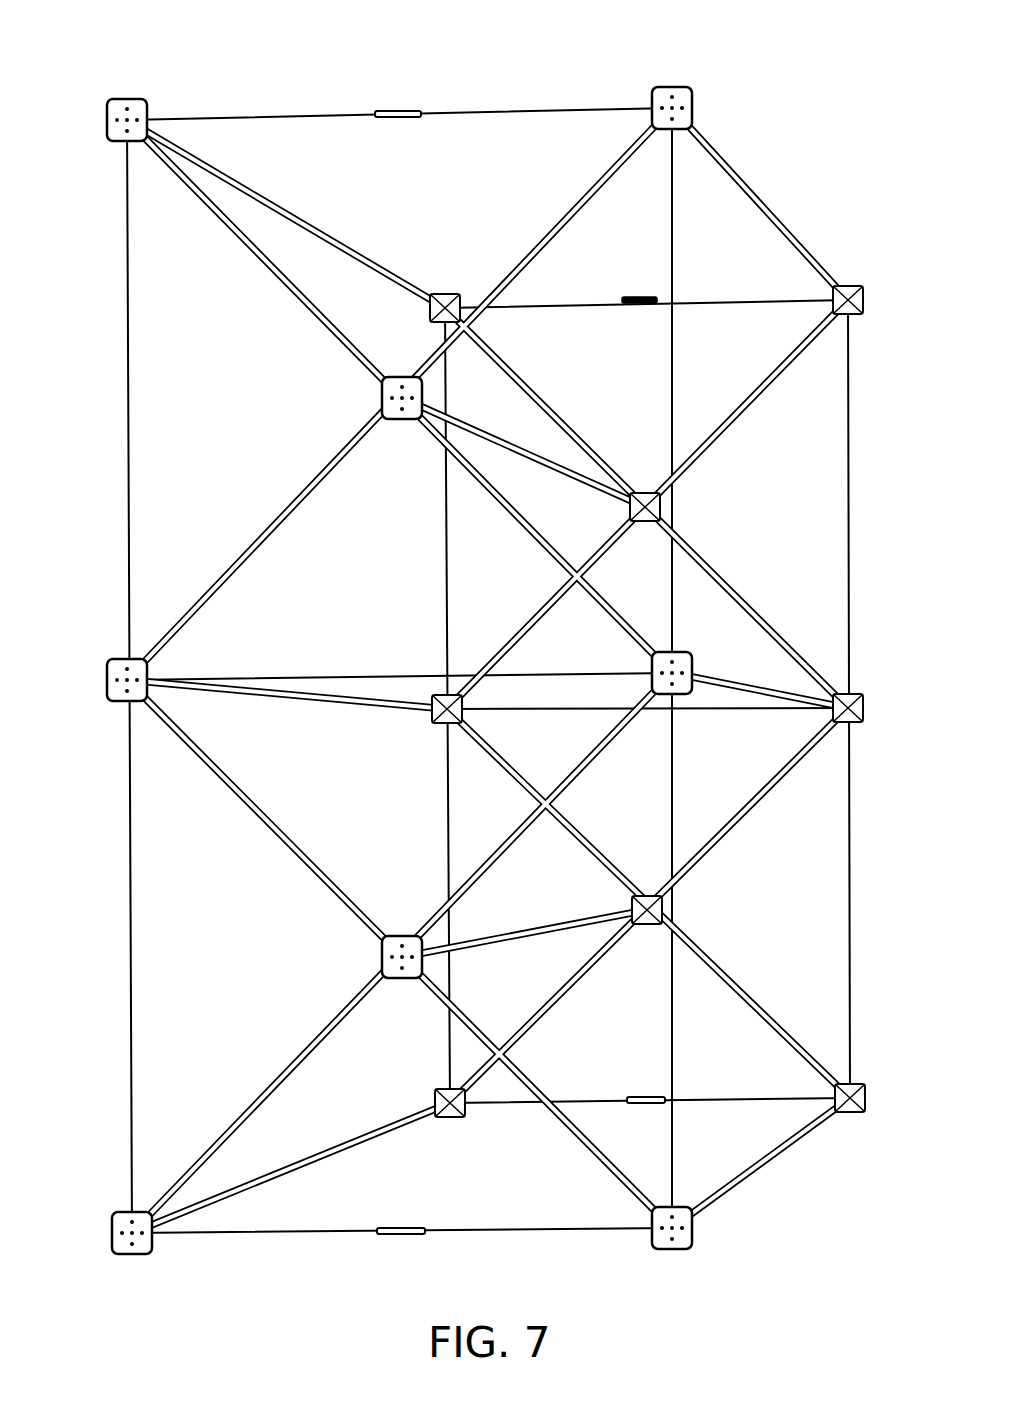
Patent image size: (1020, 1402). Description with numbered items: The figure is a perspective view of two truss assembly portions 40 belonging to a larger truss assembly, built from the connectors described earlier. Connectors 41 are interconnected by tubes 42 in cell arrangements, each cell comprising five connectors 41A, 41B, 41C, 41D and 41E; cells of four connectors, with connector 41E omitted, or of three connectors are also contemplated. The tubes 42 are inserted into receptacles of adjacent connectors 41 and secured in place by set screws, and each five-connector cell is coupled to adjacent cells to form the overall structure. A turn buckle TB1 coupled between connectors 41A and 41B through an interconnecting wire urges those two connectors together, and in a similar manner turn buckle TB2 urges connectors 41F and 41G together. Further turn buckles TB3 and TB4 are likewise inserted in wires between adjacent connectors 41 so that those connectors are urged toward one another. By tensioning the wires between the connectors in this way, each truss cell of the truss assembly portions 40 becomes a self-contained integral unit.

The truss assembly portion 40 is at (116, 322).
The connector 41 is at (650, 492).
The connector 41A is at (140, 100).
The connector 41B is at (695, 100).
The connector 41C is at (692, 667).
The connector 41D is at (108, 698).
The connector 41E is at (398, 421).
The connector 41F is at (441, 293).
The connector 41G is at (865, 307).
The tube 42 is at (780, 1171).
The turn buckle TB1 is at (384, 110).
The turn buckle TB2 is at (648, 298).
The turn buckle TB3 is at (402, 1238).
The turn buckle TB4 is at (665, 1100).